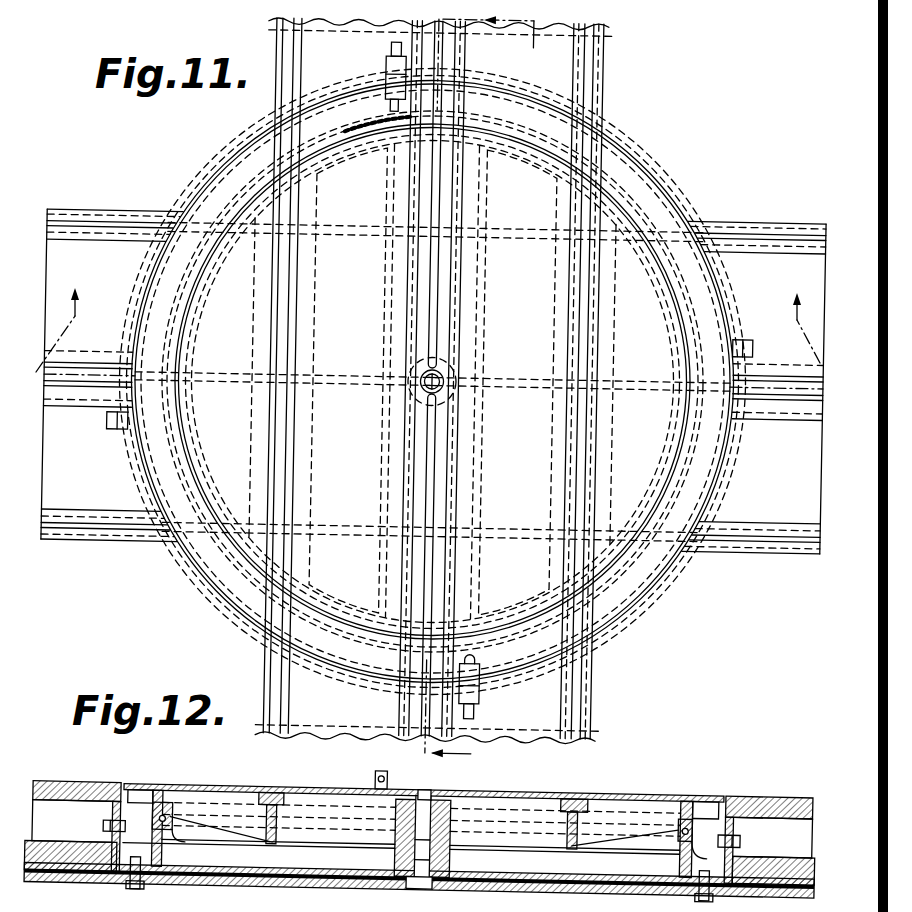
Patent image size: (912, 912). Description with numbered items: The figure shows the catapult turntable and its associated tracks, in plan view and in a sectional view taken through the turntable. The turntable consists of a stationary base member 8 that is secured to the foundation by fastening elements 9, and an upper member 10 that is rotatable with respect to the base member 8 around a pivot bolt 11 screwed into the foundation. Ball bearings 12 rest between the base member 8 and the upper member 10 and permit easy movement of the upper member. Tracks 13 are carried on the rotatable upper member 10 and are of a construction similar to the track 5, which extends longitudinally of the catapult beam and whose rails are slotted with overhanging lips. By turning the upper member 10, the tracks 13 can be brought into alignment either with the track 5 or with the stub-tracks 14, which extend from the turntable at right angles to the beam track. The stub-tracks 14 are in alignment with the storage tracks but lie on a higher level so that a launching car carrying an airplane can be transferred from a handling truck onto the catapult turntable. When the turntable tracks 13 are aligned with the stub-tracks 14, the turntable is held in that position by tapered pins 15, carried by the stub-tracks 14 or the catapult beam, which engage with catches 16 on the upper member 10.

In FIG. 11, the track 5 is at (300, 52).
In FIG. 12, the stationary base member 8 is at (363, 857).
In FIG. 12, the fastening elements 9 is at (136, 893).
In FIG. 11, the upper member 10 is at (640, 181).
In FIG. 12, the upper member 10 is at (617, 793).
In FIG. 11, the pivot bolt 11 is at (442, 381).
In FIG. 12, the pivot bolt 11 is at (422, 892).
In FIG. 11, the ball bearings 12 is at (428, 318).
In FIG. 12, the ball bearings 12 is at (165, 808).
In FIG. 11, the tracks 13 is at (242, 351).
In FIG. 11, the stub-tracks 14 is at (117, 213).
In FIG. 12, the stub-tracks 14 is at (68, 783).
In FIG. 11, the tapered pins 15 is at (430, 384).
In FIG. 12, the tapered pins 15 is at (390, 780).
In FIG. 11, the catches 16 is at (385, 99).